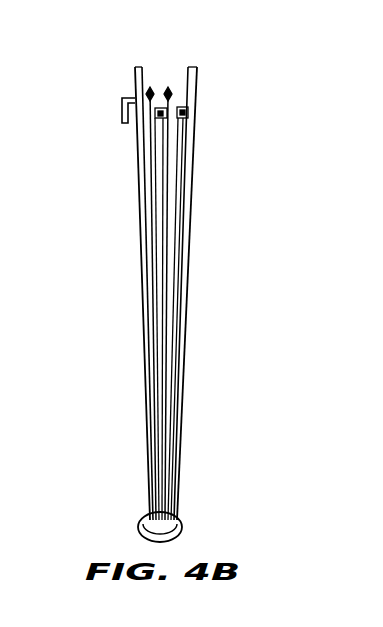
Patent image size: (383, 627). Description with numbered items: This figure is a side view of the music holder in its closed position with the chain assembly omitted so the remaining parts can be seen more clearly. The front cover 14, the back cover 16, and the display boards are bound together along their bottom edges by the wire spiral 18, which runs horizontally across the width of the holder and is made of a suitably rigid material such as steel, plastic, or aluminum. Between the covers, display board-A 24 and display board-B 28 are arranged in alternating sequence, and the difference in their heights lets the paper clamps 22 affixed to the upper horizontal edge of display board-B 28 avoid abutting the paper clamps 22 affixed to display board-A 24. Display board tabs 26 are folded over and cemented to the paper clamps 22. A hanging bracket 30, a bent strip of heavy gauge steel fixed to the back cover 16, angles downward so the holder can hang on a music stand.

The front cover 14 is at (188, 270).
The back cover 16 is at (140, 271).
The wire spiral 18 is at (185, 524).
The paper clamp 22 is at (142, 85).
The display board-A 24 is at (141, 177).
The display board tab 26 is at (150, 88).
The display board-B 28 is at (138, 155).
The hanging bracket 30 is at (122, 112).